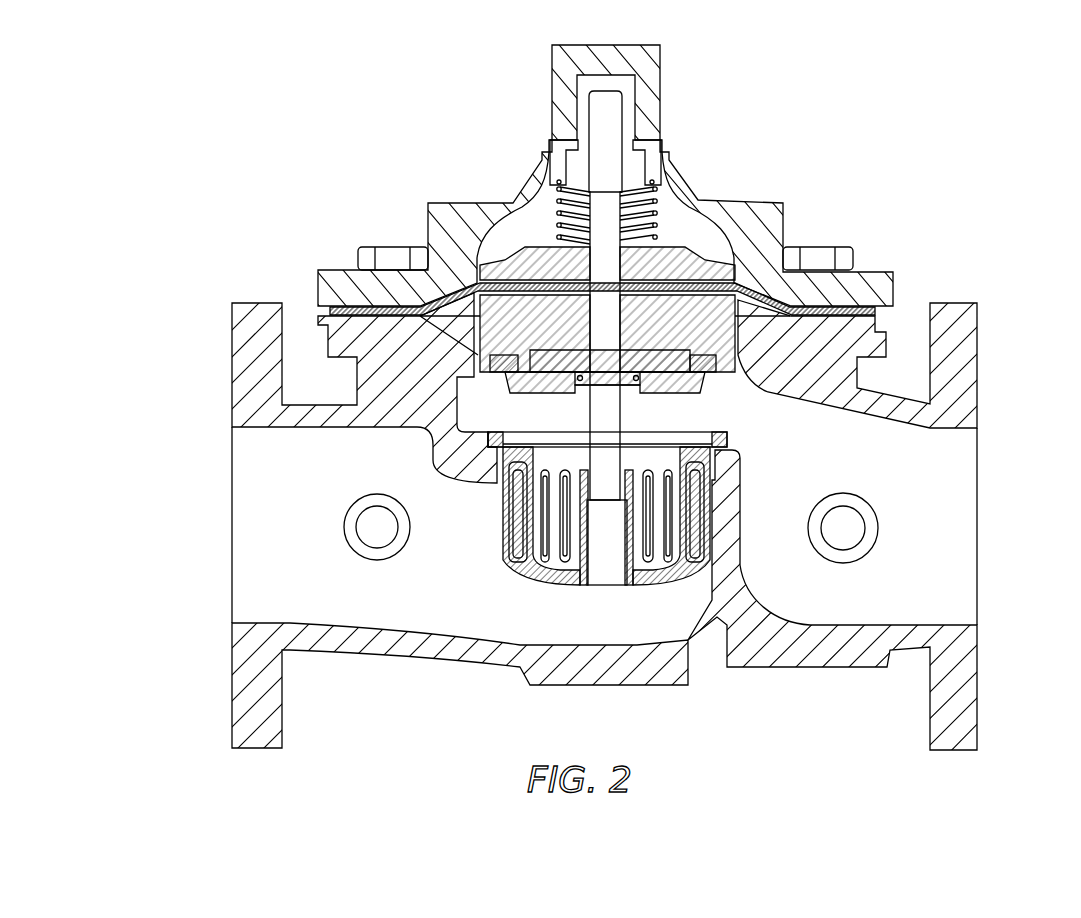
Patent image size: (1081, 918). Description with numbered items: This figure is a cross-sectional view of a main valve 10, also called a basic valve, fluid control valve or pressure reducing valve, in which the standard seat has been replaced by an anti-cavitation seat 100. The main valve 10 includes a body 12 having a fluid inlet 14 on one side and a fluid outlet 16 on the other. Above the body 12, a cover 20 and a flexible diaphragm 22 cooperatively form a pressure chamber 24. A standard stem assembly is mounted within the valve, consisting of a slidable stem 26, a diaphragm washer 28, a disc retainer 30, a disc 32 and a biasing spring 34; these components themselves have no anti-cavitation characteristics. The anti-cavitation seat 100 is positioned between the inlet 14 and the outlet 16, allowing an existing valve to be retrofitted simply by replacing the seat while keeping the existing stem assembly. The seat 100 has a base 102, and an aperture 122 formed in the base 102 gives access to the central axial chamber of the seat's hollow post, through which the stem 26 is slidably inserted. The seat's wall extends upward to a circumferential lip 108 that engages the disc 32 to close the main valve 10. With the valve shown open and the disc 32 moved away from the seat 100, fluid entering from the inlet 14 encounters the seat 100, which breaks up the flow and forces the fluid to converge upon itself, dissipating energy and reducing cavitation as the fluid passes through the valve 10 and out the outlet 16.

The main valve 10 is at (272, 205).
The body 12 is at (407, 645).
The fluid inlet 14 is at (258, 527).
The fluid outlet 16 is at (897, 568).
The cover 20 is at (745, 203).
The flexible diaphragm 22 is at (762, 298).
The pressure chamber 24 is at (545, 215).
The stem 26 is at (605, 108).
The diaphragm washer 28 is at (517, 268).
The disc retainer 30 is at (713, 340).
The disc 32 is at (713, 365).
The biasing spring 34 is at (533, 225).
The anti-cavitation seat 100 is at (487, 570).
The base 102 is at (537, 573).
The circumferential lip 108 is at (497, 437).
The aperture 122 is at (605, 553).